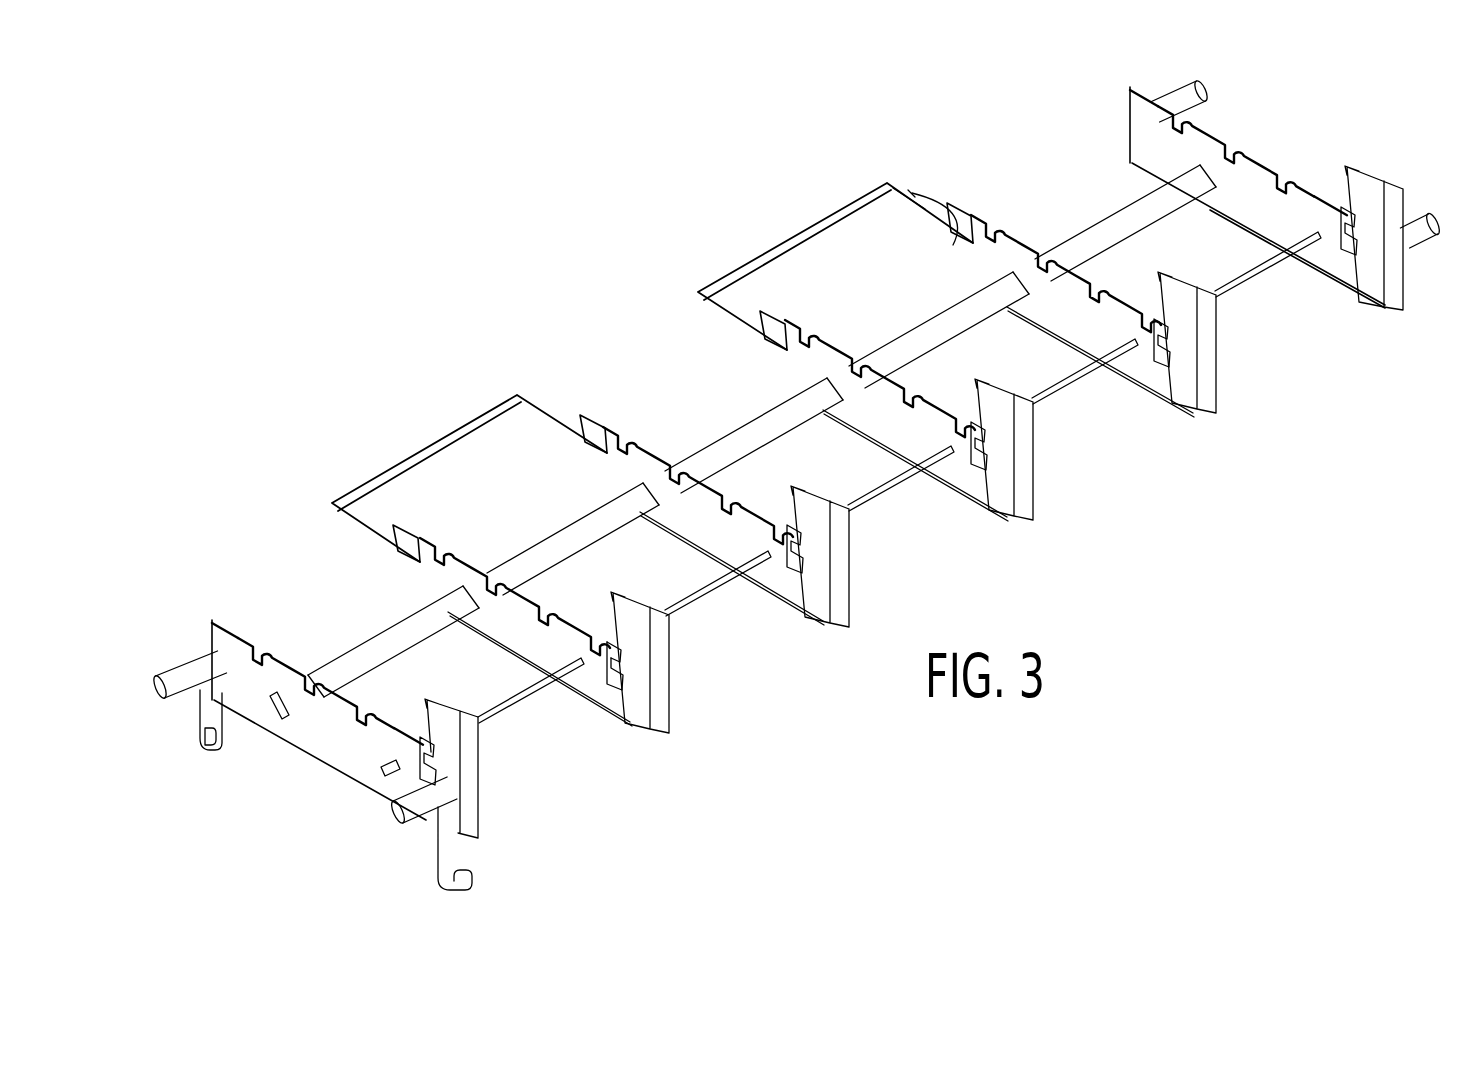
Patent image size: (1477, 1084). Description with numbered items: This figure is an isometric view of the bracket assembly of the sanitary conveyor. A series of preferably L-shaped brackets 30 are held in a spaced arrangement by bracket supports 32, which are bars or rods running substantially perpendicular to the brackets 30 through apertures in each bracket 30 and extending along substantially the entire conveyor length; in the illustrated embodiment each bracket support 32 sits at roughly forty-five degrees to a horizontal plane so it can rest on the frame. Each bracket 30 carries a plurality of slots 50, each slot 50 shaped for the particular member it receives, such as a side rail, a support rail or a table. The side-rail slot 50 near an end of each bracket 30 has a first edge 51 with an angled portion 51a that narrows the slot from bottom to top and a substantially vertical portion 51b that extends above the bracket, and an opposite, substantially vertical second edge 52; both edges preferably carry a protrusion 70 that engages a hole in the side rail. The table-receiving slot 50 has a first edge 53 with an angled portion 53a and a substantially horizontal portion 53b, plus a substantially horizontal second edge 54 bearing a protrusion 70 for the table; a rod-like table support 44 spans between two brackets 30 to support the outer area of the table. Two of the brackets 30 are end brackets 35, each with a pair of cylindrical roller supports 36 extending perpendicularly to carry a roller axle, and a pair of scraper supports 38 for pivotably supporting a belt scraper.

The bracket 30 is at (1353, 278).
The bracket support 32 is at (1250, 275).
The end bracket 35 is at (1367, 287).
The roller support 36 is at (1420, 240).
The scraper support 38 is at (463, 880).
The table support 44 is at (823, 213).
The slot 50 is at (803, 567).
The first edge 51 is at (643, 634).
The angled portion 51a is at (623, 678).
The substantially vertical portion 51b is at (617, 613).
The second edge 52 is at (617, 705).
The first edge 53 is at (957, 184).
The angled portion 53a is at (933, 203).
The substantially horizontal portion 53b is at (917, 193).
The second edge 54 is at (953, 243).
The protrusion 70 is at (922, 232).